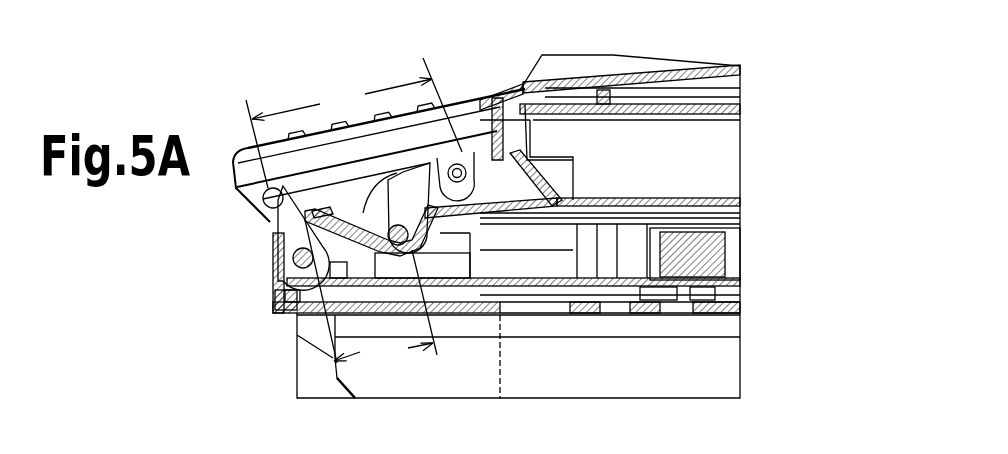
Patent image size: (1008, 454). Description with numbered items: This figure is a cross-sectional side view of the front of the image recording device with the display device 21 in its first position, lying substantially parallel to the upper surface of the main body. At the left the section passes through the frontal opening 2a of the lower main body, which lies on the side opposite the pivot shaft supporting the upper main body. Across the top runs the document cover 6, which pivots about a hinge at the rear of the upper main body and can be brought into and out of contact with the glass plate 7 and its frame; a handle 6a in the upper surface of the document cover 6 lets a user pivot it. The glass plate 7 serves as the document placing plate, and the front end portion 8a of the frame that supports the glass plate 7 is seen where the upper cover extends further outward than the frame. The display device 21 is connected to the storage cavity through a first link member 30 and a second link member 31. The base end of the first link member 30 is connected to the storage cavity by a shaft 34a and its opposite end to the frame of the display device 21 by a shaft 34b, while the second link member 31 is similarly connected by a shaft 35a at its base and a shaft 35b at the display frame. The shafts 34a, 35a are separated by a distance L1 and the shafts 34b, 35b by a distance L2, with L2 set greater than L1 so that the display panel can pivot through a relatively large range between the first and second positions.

The frontal opening 2a is at (298, 399).
The document cover 6 is at (704, 70).
The handle 6a is at (588, 70).
The glass plate 7 is at (688, 118).
The front end portion 8a is at (543, 86).
The display device 21 is at (238, 142).
The first link member 30 is at (268, 247).
The second link member 31 is at (488, 232).
The shaft 34a is at (272, 282).
The shaft 34b is at (262, 200).
The shaft 35a is at (430, 193).
The shaft 35b is at (456, 165).
The distance L1 is at (371, 295).
The distance L2 is at (354, 123).